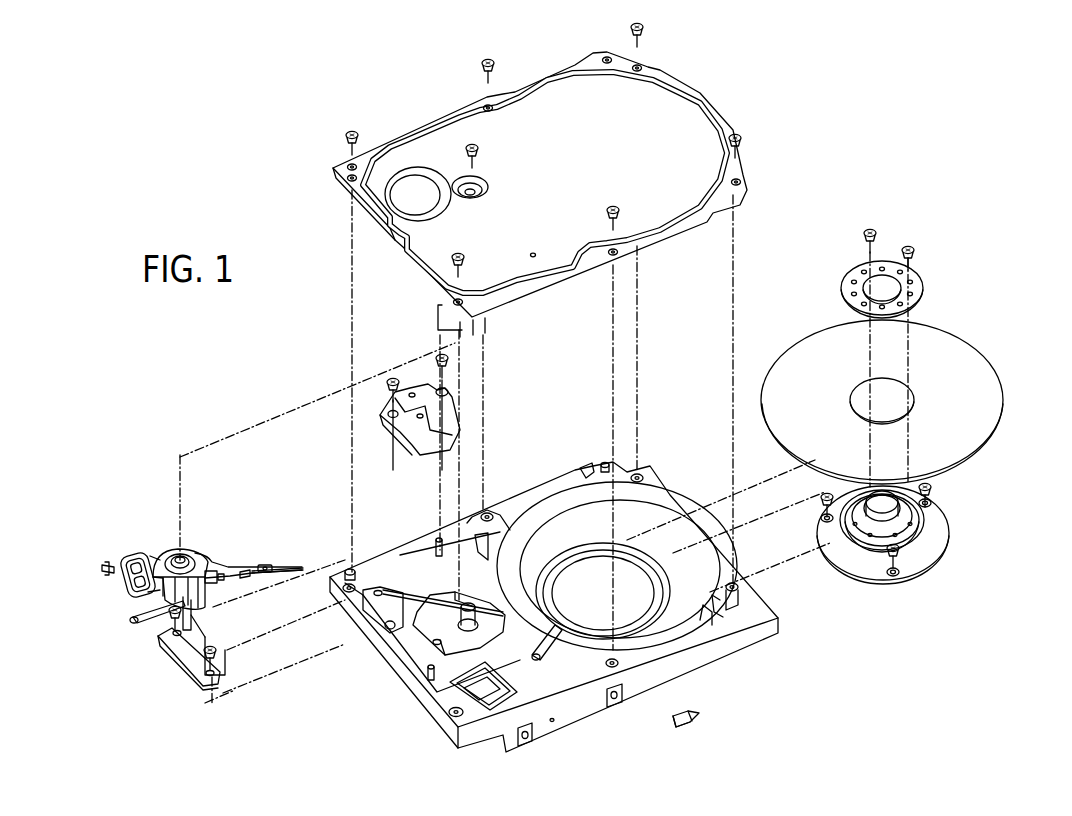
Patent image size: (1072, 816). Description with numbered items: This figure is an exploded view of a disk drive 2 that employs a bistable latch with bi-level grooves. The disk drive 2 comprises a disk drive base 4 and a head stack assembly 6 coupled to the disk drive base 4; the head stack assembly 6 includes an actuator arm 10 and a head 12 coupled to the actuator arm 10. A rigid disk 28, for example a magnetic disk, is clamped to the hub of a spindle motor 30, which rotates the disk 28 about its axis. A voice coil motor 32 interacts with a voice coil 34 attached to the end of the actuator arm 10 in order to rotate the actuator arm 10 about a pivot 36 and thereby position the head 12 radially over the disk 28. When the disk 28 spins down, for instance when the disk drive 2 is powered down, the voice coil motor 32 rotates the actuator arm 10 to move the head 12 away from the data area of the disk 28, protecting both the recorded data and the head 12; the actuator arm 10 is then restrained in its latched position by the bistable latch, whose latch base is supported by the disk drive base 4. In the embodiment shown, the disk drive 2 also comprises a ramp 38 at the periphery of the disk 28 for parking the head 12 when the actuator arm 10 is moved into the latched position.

The disk drive 2 is at (280, 219).
The disk drive base 4 is at (690, 670).
The head stack assembly 6 is at (165, 509).
The actuator arm 10 is at (228, 565).
The head 12 is at (300, 563).
The rigid disk 28 is at (1007, 405).
The spindle motor 30 is at (950, 525).
The voice coil motor 32 is at (456, 411).
The voice coil 34 is at (113, 585).
The pivot 36 is at (177, 552).
The ramp 38 is at (693, 718).